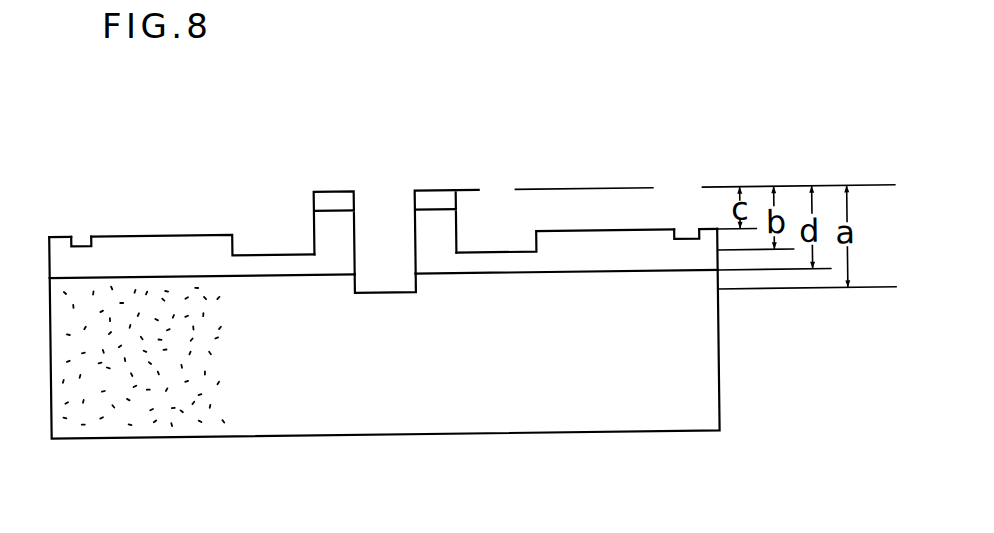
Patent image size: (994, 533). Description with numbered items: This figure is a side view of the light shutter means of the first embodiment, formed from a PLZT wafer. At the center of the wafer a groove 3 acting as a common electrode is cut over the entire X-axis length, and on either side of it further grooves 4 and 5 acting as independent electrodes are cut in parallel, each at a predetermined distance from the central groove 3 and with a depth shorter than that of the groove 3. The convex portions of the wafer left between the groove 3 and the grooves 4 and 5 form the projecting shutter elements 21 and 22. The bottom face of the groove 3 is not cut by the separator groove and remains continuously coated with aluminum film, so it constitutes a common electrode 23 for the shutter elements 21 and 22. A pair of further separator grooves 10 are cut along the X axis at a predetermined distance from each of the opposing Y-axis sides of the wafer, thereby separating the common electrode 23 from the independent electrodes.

The groove 3 is at (385, 232).
The groove 4 is at (253, 250).
The groove 5 is at (497, 253).
The separator grooves 10 is at (86, 241).
The shutter element 21 is at (327, 189).
The shutter element 22 is at (440, 190).
The common electrode 23 is at (234, 425).